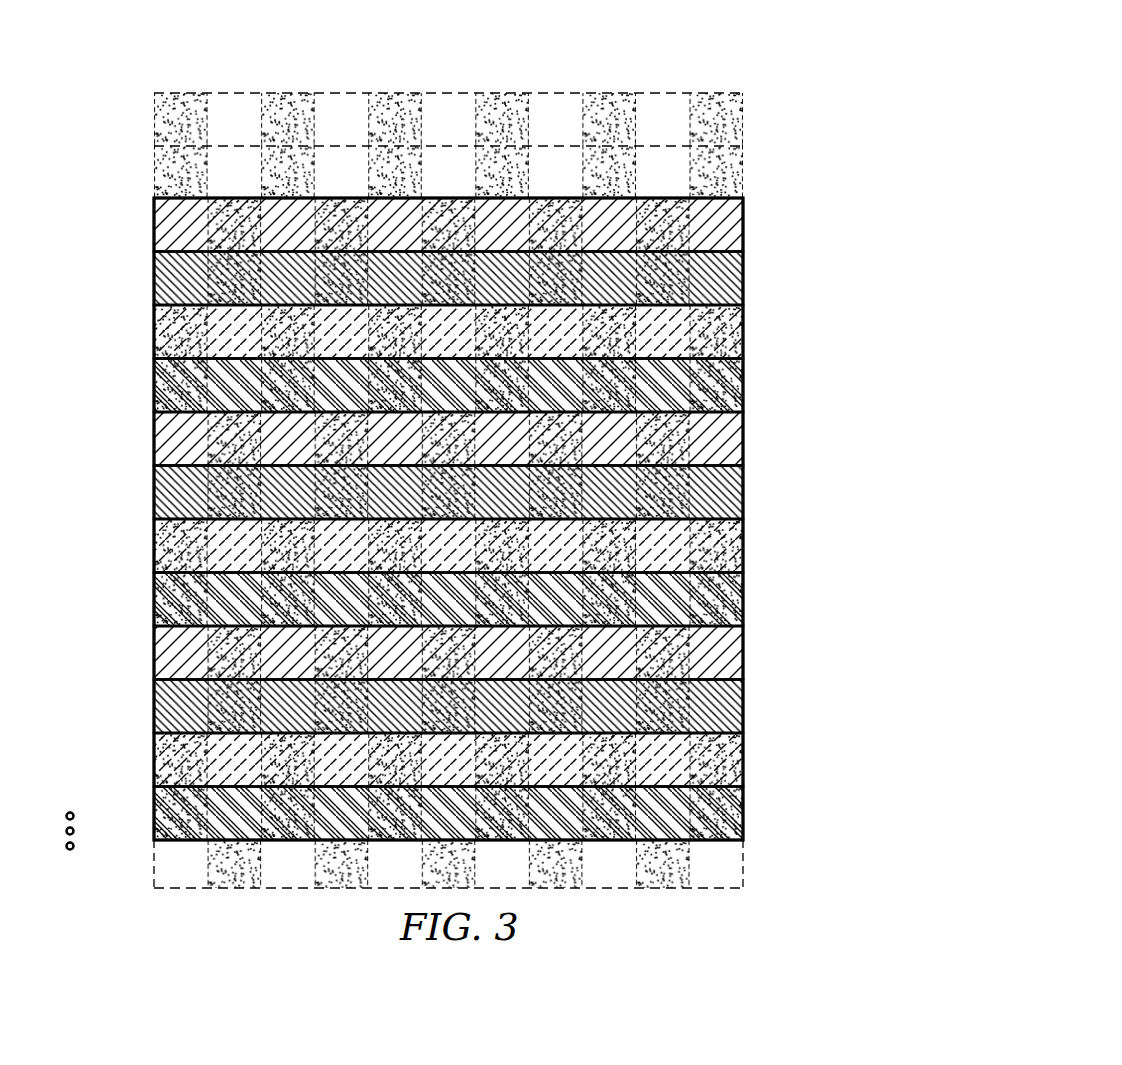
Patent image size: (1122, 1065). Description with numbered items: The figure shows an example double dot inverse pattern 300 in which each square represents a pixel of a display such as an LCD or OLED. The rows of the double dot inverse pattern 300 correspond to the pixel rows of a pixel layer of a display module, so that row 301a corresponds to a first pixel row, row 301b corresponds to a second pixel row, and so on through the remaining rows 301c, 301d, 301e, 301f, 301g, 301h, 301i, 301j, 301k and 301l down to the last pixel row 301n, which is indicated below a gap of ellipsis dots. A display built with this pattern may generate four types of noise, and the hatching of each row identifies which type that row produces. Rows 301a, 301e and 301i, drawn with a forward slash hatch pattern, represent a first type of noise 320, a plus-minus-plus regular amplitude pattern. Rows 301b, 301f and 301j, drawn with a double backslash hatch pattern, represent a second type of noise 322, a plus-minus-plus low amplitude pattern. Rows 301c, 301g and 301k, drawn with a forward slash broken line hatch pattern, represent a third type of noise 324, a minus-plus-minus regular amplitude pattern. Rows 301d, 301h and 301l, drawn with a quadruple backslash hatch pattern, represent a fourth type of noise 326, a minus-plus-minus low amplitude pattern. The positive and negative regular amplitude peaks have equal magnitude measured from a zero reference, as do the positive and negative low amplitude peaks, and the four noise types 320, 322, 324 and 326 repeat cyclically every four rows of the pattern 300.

The double dot inverse pattern 300 is at (556, 55).
The row 301a is at (154, 235).
The row 301b is at (154, 288).
The row 301c is at (154, 342).
The row 301d is at (154, 396).
The row 301e is at (154, 449).
The row 301f is at (154, 502).
The row 301g is at (154, 556).
The row 301h is at (154, 610).
The row 301i is at (154, 663).
The row 301j is at (154, 716).
The row 301k is at (154, 770).
The row 301l is at (154, 807).
The row 301n is at (154, 877).
The first type of noise 320 is at (743, 227).
The second type of noise 322 is at (743, 284).
The third type of noise 324 is at (743, 336).
The fourth type of noise 326 is at (743, 390).